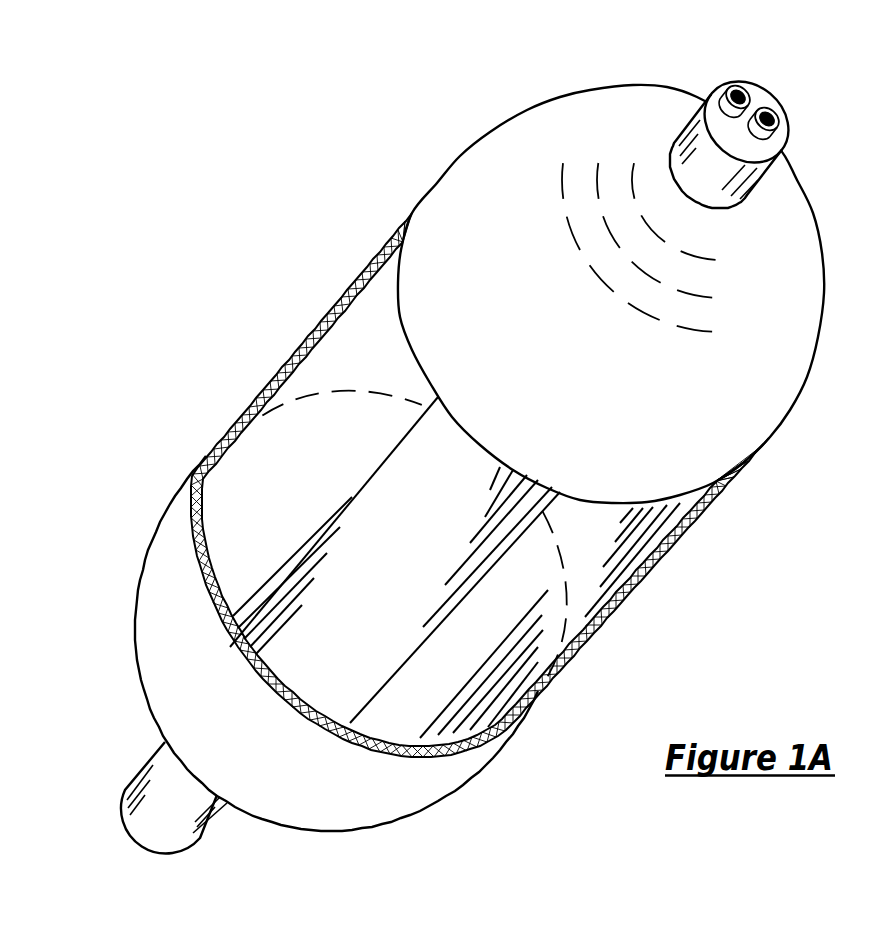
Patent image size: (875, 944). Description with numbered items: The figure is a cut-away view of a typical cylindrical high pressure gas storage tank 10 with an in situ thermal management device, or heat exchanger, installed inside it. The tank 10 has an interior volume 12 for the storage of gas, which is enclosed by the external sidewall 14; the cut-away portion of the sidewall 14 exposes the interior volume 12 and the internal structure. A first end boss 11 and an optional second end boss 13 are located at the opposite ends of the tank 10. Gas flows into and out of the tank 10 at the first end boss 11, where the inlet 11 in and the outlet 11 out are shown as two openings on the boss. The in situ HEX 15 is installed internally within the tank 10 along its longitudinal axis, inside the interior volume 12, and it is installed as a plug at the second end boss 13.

The high pressure gas storage tank 10 is at (488, 132).
The first end boss 11 is at (766, 93).
The outlet 11 out is at (732, 90).
The inlet 11 in is at (777, 118).
The interior volume 12 is at (347, 446).
The second end boss 13 is at (157, 808).
The external sidewall 14 is at (603, 635).
The in situ HEX 15 is at (285, 560).